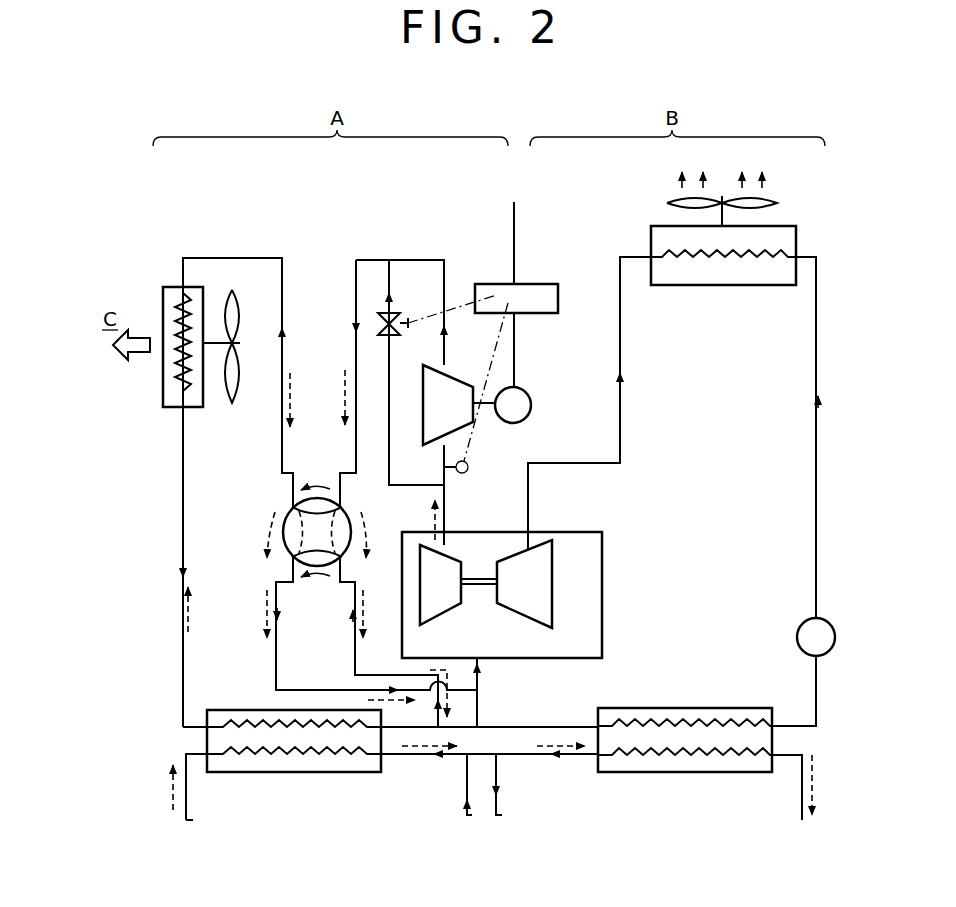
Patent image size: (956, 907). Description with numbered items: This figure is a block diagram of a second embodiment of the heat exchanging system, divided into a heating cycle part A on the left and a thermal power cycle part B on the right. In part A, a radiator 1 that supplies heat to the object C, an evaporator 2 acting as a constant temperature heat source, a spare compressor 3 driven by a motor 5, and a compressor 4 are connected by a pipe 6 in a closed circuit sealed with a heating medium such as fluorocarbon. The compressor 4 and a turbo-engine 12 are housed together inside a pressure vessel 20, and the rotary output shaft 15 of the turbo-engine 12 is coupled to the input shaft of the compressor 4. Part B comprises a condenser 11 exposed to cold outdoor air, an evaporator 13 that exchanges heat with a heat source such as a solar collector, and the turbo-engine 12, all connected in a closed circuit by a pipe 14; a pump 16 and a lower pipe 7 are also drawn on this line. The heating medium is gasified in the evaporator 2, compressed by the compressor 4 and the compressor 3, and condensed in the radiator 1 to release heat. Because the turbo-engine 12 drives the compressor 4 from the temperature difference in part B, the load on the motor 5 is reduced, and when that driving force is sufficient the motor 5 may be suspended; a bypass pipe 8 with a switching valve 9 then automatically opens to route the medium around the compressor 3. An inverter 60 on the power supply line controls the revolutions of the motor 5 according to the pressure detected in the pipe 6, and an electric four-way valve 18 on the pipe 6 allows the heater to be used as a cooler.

The radiator 1 is at (187, 408).
The evaporator 2 is at (297, 772).
The spare compressor 3 is at (457, 386).
The compressor 4 is at (443, 603).
The motor 5 is at (531, 402).
The pipe 6 is at (183, 657).
The pipe 7 is at (422, 756).
The bypass pipe 8 is at (402, 486).
The switching valve 9 is at (381, 338).
The condenser 11 is at (755, 285).
The turbo-engine 12 is at (553, 578).
The evaporator 13 is at (700, 707).
The pipe 14 is at (816, 465).
The rotary output shaft 15 is at (482, 578).
The pump 16 is at (804, 622).
The electric four-way valve 18 is at (292, 509).
The pressure vessel 20 is at (599, 532).
The inverter 60 is at (542, 282).